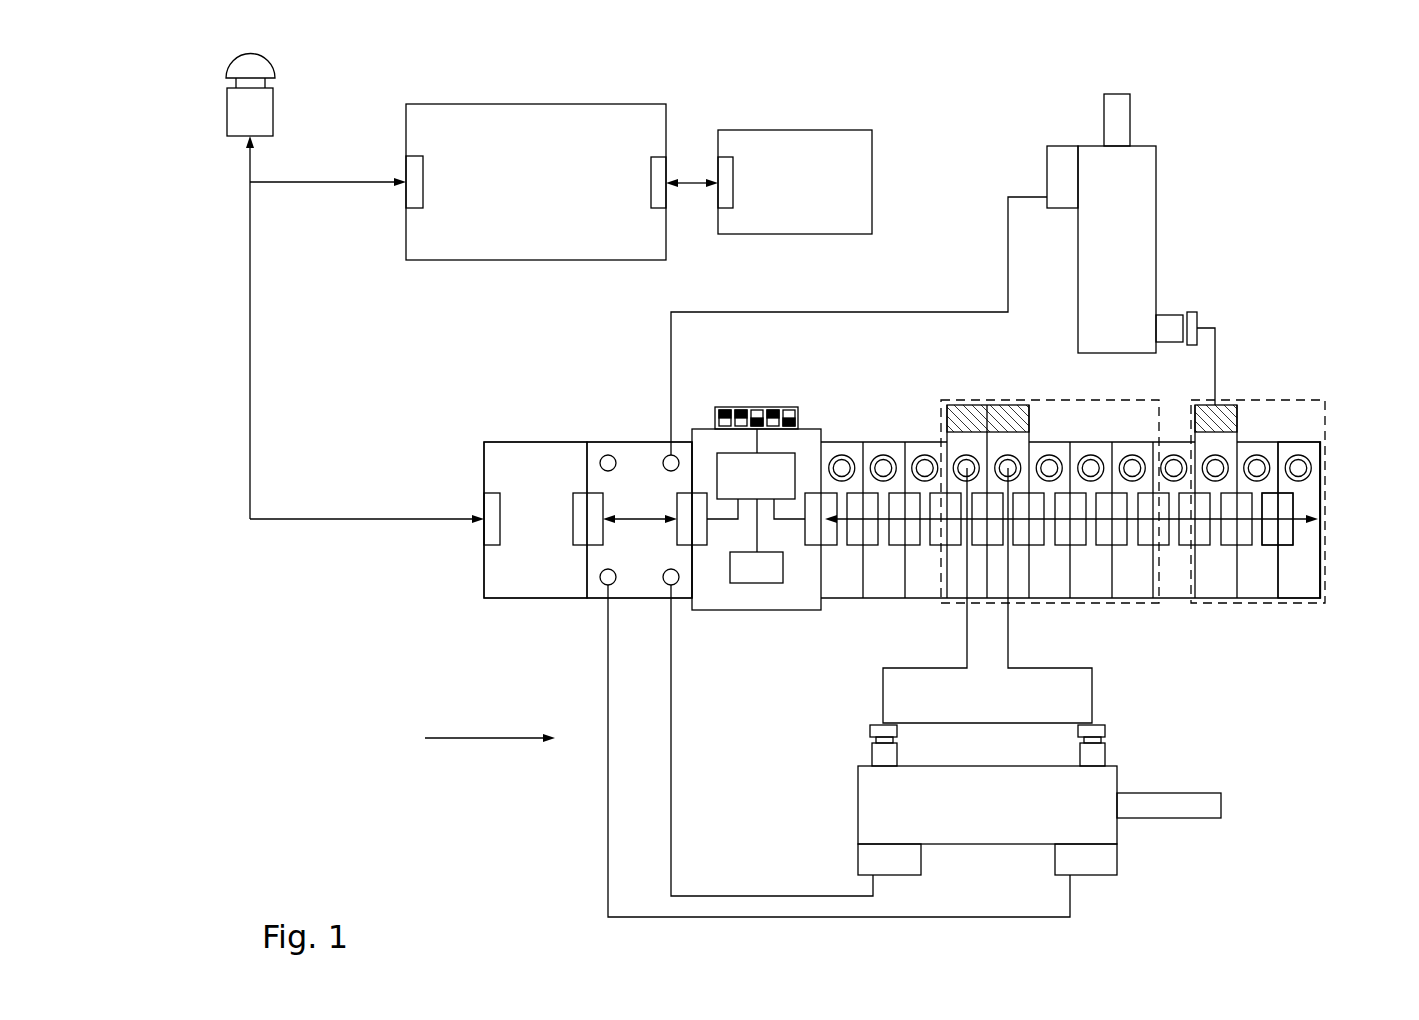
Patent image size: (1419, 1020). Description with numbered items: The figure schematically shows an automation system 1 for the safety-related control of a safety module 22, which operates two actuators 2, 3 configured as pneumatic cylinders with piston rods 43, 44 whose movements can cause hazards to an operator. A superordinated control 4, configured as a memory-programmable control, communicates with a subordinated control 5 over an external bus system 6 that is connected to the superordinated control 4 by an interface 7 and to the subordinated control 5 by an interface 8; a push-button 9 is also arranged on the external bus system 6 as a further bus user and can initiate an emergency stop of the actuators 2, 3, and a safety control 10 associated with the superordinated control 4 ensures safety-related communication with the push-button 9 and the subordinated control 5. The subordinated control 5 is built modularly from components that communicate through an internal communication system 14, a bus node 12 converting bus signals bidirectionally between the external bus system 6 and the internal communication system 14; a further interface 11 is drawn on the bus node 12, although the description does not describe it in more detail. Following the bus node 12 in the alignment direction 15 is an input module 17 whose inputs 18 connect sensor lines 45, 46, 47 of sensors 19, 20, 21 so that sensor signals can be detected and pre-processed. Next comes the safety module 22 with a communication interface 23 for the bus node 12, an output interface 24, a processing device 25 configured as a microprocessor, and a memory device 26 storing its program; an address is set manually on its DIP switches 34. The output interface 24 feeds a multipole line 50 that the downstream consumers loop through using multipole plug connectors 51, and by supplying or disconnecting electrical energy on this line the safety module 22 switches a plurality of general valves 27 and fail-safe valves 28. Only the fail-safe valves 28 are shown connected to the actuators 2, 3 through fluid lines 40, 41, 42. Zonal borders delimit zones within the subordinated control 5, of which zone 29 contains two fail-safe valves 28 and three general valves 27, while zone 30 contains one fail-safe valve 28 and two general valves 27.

The automation system 1 is at (1268, 215).
The actuator 2 is at (1085, 793).
The actuator 3 is at (1138, 182).
The superordinated control 4 is at (452, 133).
The subordinated control 5 is at (470, 633).
The external bus system 6 is at (250, 278).
The interface 7 is at (412, 168).
The interface 8 is at (488, 537).
The push-button 9 is at (238, 117).
The safety control 10 is at (827, 145).
The interface 11 is at (580, 500).
The bus node 12 is at (545, 578).
The internal communication system 14 is at (642, 517).
The alignment direction 15 is at (490, 740).
The input module 17 is at (638, 578).
The inputs 18 is at (668, 455).
The sensor 19 is at (900, 863).
The sensor 20 is at (1100, 862).
The sensor 21 is at (1056, 163).
The safety module 22 is at (735, 600).
The communication interface 23 is at (700, 498).
The output interface 24 is at (813, 498).
The processing device 25 is at (788, 458).
The memory device 26 is at (766, 574).
The general valves 27 is at (925, 585).
The fail-safe valves 28 is at (1003, 440).
The zone 29 is at (1147, 603).
The zone 30 is at (1295, 397).
The DIP switches 34 is at (741, 407).
The fluid line 40 is at (883, 703).
The fluid line 41 is at (1092, 698).
The fluid line 42 is at (1218, 328).
The piston rod 43 is at (1210, 803).
The piston rod 44 is at (1118, 113).
The sensor line 45 is at (605, 880).
The sensor line 46 is at (660, 770).
The sensor line 47 is at (1008, 245).
The multipole line 50 is at (1290, 522).
The multipole plug connectors 51 is at (1287, 502).